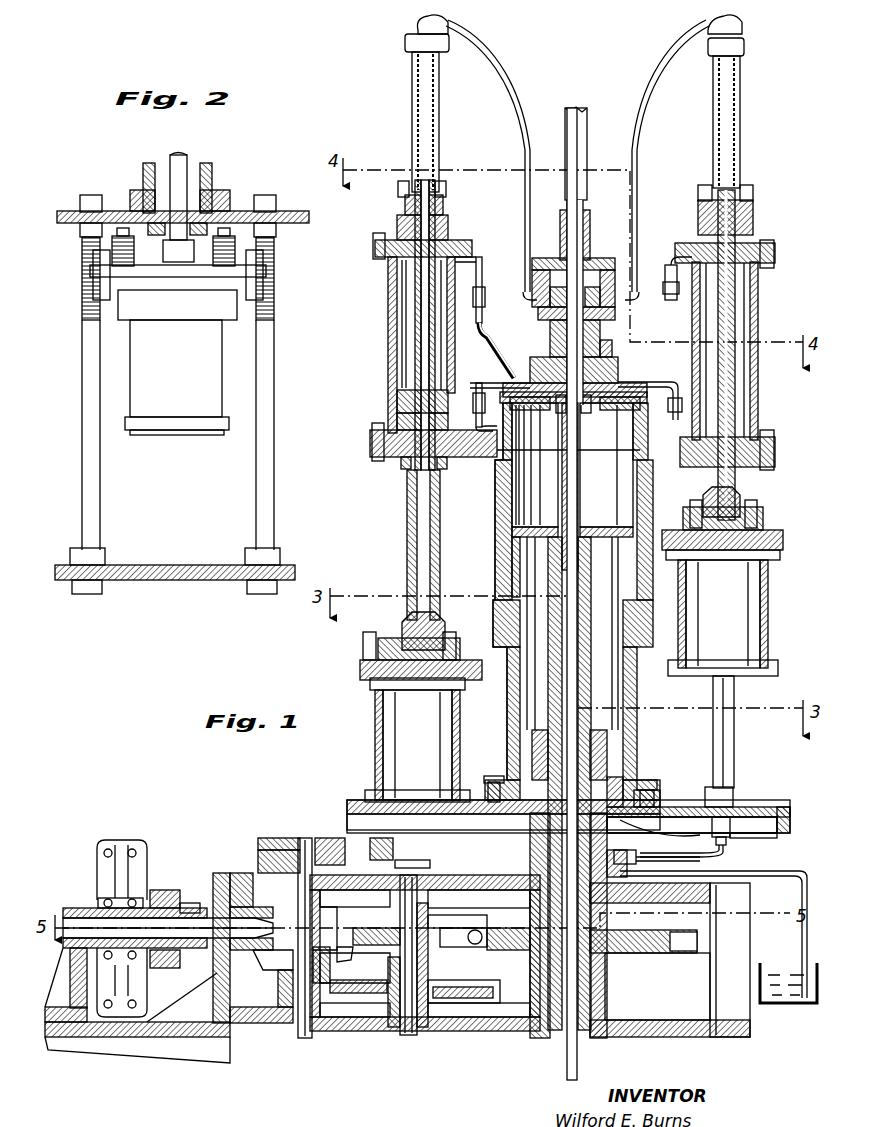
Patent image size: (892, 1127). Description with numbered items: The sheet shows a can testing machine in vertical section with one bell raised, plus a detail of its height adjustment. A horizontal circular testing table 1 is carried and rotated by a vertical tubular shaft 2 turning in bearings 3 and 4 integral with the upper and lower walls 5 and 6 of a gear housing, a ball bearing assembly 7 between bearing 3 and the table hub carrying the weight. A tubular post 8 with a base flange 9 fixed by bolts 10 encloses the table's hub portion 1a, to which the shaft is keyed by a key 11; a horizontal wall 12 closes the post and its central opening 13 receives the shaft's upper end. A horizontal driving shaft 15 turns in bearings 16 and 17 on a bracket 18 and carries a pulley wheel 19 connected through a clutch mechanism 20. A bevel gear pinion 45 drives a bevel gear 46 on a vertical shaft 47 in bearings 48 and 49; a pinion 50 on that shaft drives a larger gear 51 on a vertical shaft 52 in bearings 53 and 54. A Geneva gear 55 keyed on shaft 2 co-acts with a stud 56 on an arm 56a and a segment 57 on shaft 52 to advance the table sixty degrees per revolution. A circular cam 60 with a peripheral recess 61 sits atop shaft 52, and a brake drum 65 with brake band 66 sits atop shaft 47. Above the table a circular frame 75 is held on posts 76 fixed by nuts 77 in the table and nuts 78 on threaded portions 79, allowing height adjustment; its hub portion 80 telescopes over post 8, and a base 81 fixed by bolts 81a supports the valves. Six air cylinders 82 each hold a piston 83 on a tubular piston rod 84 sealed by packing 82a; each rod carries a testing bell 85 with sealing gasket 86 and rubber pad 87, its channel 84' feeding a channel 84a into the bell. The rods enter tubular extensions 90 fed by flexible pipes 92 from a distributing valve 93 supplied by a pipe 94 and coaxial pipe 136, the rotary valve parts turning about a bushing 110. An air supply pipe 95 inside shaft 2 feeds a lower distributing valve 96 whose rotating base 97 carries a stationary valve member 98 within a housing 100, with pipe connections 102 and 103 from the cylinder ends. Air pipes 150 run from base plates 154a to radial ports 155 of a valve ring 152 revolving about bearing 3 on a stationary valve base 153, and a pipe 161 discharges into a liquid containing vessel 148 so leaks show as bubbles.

In FIG. 1, the testing table 1 is at (350, 815).
In FIG. 1, the hub portion 1a is at (532, 752).
In FIG. 1, the tubular shaft 2 is at (507, 620).
In FIG. 1, the bearing 3 is at (535, 836).
In FIG. 1, the bearing 4 is at (607, 1000).
In FIG. 1, the upper wall 5 is at (678, 900).
In FIG. 1, the lower wall 6 is at (660, 1037).
In FIG. 1, the ball bearing assembly 7 is at (640, 838).
In FIG. 1, the tubular post 8 is at (507, 712).
In FIG. 1, the base flange 9 is at (660, 798).
In FIG. 1, the bolts 10 is at (492, 782).
In FIG. 1, the key 11 is at (637, 752).
In FIG. 1, the horizontal wall 12 is at (538, 526).
In FIG. 1, the central opening 13 is at (512, 542).
In FIG. 1, the driving shaft 15 is at (108, 918).
In FIG. 1, the bearing 16 is at (75, 913).
In FIG. 1, the bearing 17 is at (218, 878).
In FIG. 1, the bracket 18 is at (195, 1005).
In FIG. 1, the pulley wheel 19 is at (105, 843).
In FIG. 1, the clutch mechanism 20 is at (165, 890).
In FIG. 1, the bevel gear pinion 45 is at (256, 878).
In FIG. 1, the bevel gear 46 is at (262, 1025).
In FIG. 1, the vertical shaft 47 is at (300, 838).
In FIG. 1, the bearing 48 is at (325, 838).
In FIG. 1, the bearing 49 is at (316, 1027).
In FIG. 1, the pinion 50 is at (284, 1010).
In FIG. 1, the gear 51 is at (480, 982).
In FIG. 1, the vertical shaft 52 is at (414, 1035).
In FIG. 1, the bearing 53 is at (388, 905).
In FIG. 1, the bearing 54 is at (391, 1027).
In FIG. 1, the Geneva gear 55 is at (627, 954).
In FIG. 1, the stud 56 is at (492, 938).
In FIG. 1, the arm 56a is at (465, 946).
In FIG. 1, the segment 57 is at (376, 946).
In FIG. 1, the circular cam 60 is at (372, 862).
In FIG. 1, the peripheral recess 61 is at (432, 868).
In FIG. 1, the brake drum 65 is at (262, 838).
In FIG. 1, the brake band 66 is at (258, 848).
In FIG. 2, the circular frame 75 is at (310, 217).
In FIG. 1, the circular frame 75 is at (372, 452).
In FIG. 2, the posts 76 is at (82, 496).
In FIG. 1, the posts 76 is at (736, 740).
In FIG. 2, the nuts 77 is at (106, 556).
In FIG. 2, the nuts 78 is at (276, 203).
In FIG. 2, the threaded portion 79 is at (82, 277).
In FIG. 1, the cylindrical hub portion 80 is at (495, 504).
In FIG. 1, the base 81 is at (522, 432).
In FIG. 1, the bolts 81a is at (445, 470).
In FIG. 2, the air cylinders 82 is at (212, 170).
In FIG. 1, the air cylinders 82 is at (388, 312).
In FIG. 2, the packing 82a is at (148, 196).
In FIG. 1, the packing 82a is at (450, 228).
In FIG. 1, the piston 83 is at (397, 402).
In FIG. 2, the piston rod 84 is at (196, 190).
In FIG. 1, the piston rod 84 is at (601, 400).
In FIG. 1, the channel 84' is at (575, 565).
In FIG. 1, the channel 84a is at (360, 664).
In FIG. 2, the testing bell 85 is at (212, 359).
In FIG. 1, the testing bell 85 is at (375, 740).
In FIG. 2, the sealing gasket 86 is at (198, 433).
In FIG. 1, the sealing gasket 86 is at (770, 676).
In FIG. 1, the rubber pad 87 is at (377, 692).
In FIG. 1, the tubular extensions 90 is at (440, 108).
In FIG. 1, the flexible pipes 92 is at (515, 106).
In FIG. 1, the distributing valve 93 is at (603, 266).
In FIG. 1, the pipe 94 is at (580, 124).
In FIG. 1, the air supply pipe 95 is at (580, 488).
In FIG. 1, the distributing valve 96 is at (547, 357).
In FIG. 1, the rotating base 97 is at (606, 460).
In FIG. 1, the stationary valve member 98 is at (618, 370).
In FIG. 1, the housing 100 is at (612, 352).
In FIG. 1, the pipe connections 102 is at (481, 335).
In FIG. 1, the pipe connections 103 is at (502, 378).
In FIG. 1, the bushing 110 is at (600, 340).
In FIG. 1, the pipe 136 is at (560, 232).
In FIG. 1, the liquid containing vessel 148 is at (762, 1003).
In FIG. 1, the air pipes 150 is at (738, 815).
In FIG. 1, the valve ring 152 is at (722, 856).
In FIG. 1, the stationary valve base 153 is at (700, 866).
In FIG. 1, the base plates 154a is at (778, 833).
In FIG. 1, the radial ports 155 is at (700, 920).
In FIG. 1, the pipe 161 is at (800, 880).